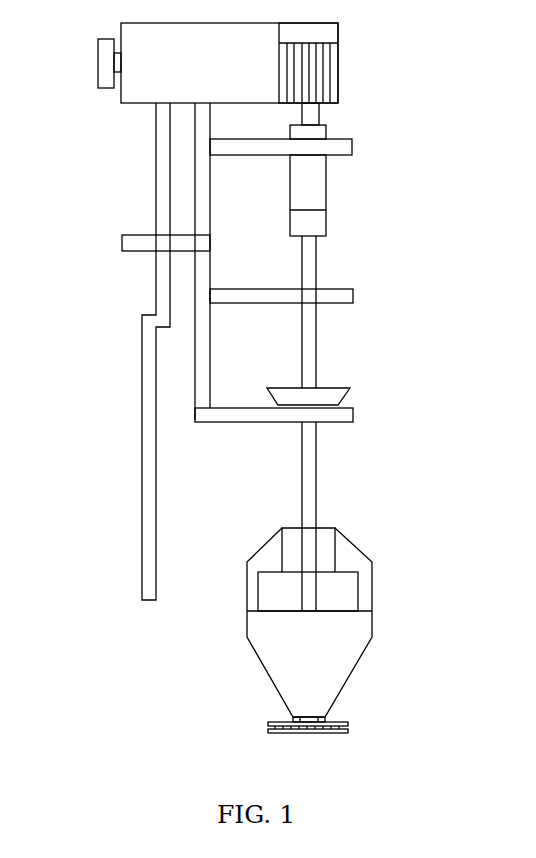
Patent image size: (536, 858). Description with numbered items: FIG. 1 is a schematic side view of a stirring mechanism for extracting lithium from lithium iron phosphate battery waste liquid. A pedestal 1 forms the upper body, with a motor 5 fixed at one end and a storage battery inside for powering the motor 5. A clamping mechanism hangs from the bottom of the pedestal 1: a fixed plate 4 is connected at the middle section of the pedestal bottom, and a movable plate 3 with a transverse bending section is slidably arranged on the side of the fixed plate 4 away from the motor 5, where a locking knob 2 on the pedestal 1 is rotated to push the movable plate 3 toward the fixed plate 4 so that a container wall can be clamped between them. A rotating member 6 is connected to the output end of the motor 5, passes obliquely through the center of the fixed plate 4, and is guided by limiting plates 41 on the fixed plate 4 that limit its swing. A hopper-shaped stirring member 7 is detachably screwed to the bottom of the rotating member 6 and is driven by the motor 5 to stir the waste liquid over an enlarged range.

The pedestal 1 is at (195, 58).
The locking knob 2 is at (84, 96).
The movable plate 3 is at (138, 351).
The fixed plate 4 is at (137, 296).
The limiting plate 41 is at (353, 410).
The motor 5 is at (367, 61).
The rotating member 6 is at (370, 357).
The stirring member 7 is at (349, 630).